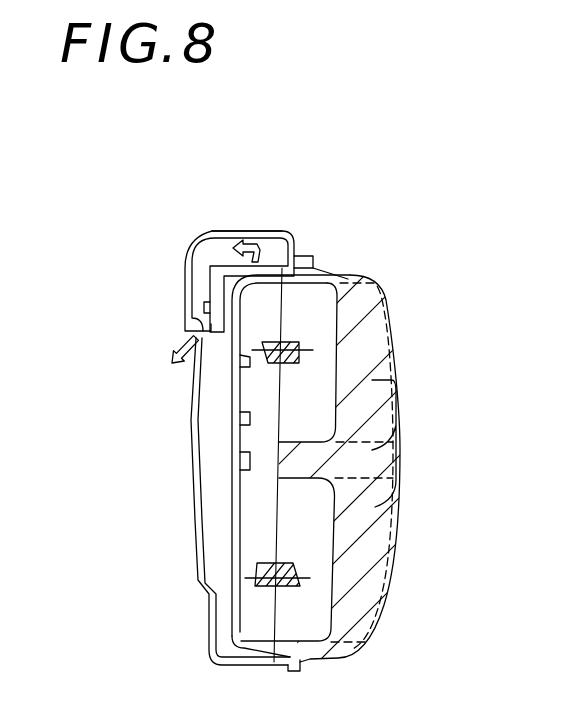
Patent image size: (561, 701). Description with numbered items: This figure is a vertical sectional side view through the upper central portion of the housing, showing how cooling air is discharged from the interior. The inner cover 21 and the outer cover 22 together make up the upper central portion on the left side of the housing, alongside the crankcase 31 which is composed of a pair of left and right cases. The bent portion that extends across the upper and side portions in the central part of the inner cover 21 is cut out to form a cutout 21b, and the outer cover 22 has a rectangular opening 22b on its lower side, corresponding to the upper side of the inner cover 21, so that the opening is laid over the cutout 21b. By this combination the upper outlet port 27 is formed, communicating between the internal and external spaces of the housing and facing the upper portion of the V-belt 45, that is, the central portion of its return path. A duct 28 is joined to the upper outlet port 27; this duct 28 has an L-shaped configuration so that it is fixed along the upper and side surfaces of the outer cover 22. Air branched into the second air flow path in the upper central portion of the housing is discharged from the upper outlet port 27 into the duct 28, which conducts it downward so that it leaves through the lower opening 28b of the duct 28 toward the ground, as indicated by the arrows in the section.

The inner cover 21 is at (237, 630).
The cutout 21b is at (213, 233).
The outer cover 22 is at (185, 450).
The rectangular opening 22b is at (192, 244).
The upper outlet port 27 is at (228, 141).
The duct 28 is at (187, 267).
The lower opening 28b is at (187, 313).
The crankcase 31 is at (383, 312).
The V-belt 45 is at (300, 352).